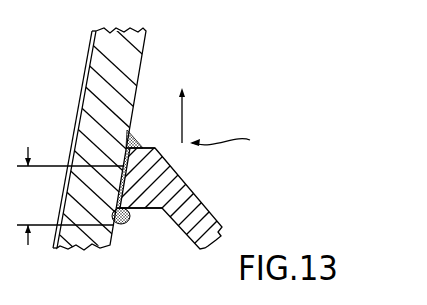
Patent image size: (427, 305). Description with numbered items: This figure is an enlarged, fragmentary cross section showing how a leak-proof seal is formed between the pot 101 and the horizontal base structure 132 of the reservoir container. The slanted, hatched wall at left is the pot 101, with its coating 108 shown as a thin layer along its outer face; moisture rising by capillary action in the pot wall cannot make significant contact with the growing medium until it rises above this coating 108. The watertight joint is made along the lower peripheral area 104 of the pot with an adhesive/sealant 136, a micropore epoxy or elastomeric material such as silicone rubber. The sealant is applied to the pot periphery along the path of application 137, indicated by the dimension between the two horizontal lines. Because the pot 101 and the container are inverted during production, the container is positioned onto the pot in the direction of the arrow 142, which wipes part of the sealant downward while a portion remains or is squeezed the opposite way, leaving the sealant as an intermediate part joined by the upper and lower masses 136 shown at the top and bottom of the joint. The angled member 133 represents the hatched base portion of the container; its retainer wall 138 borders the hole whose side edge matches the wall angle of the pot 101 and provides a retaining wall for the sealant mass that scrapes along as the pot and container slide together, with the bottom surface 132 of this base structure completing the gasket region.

The pot 101 is at (135, 57).
The coating 108 is at (88, 80).
The angled bracket member 133 is at (208, 208).
The retainer wall 138 is at (177, 161).
The horizontal base structure 132 is at (152, 210).
The adhesive/sealant 136 is at (132, 134).
The path of application 137 is at (69, 196).
The arrow 142 is at (201, 115).
The lower peripheral area 104 is at (240, 141).